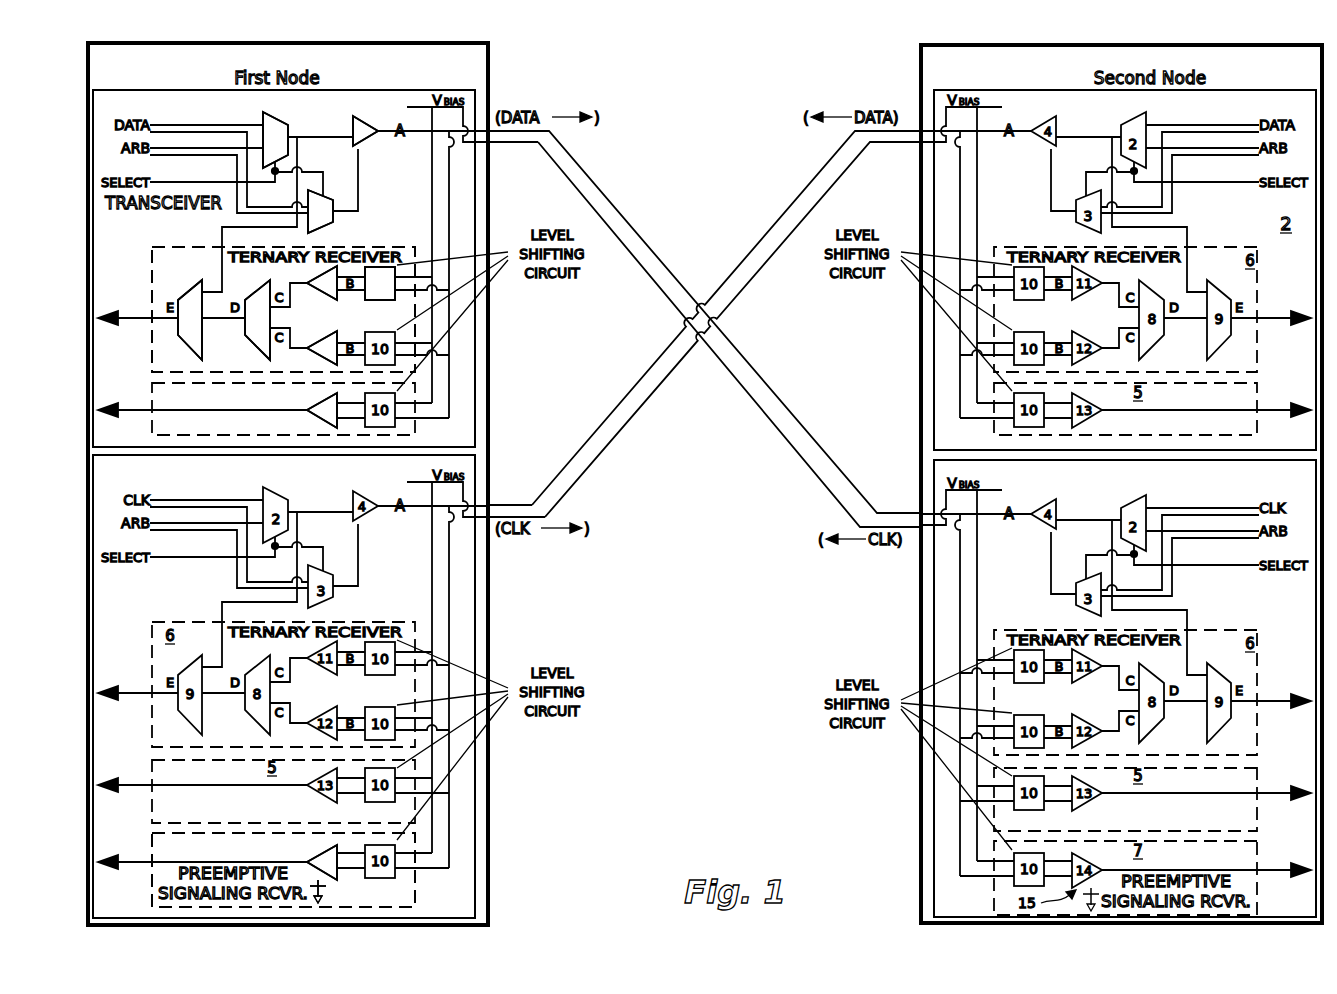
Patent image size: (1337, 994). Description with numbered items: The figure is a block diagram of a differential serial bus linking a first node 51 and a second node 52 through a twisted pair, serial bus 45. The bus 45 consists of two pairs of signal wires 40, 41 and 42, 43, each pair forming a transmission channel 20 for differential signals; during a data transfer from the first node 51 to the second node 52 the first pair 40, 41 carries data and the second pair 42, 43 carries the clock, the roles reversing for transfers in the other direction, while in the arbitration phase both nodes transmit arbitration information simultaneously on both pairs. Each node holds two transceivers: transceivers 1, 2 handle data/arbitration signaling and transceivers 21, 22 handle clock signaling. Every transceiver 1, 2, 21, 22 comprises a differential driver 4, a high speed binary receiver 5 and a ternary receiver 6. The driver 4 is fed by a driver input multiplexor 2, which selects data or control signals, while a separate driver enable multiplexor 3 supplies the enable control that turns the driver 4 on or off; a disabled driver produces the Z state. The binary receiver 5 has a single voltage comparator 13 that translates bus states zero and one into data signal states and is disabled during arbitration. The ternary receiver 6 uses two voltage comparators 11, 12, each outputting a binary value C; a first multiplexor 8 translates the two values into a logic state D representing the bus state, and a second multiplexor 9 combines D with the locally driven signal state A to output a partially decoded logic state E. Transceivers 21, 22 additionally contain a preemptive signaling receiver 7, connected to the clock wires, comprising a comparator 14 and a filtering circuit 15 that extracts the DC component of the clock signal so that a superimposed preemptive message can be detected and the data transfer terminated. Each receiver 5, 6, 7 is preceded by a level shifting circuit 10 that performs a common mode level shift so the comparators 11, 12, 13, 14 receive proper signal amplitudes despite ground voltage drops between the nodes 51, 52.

The first node 51 is at (268, 66).
The second node 52 is at (1141, 66).
The transceiver 1 is at (114, 236).
The transceiver 2 is at (275, 140).
The transceiver 21 is at (110, 613).
The transceiver 22 is at (1280, 615).
The driver enable multiplexor 3 is at (320, 211).
The differential driver 4 is at (365, 131).
The high speed binary receiver 5 is at (267, 401).
The ternary receiver 6 is at (165, 269).
The preemptive signaling receiver 7 is at (267, 851).
The first multiplexor 8 is at (257, 320).
The second multiplexor 9 is at (190, 320).
The level shifting circuit 10 is at (380, 283).
The voltage comparator 11 is at (322, 283).
The voltage comparator 12 is at (322, 348).
The voltage comparator 13 is at (322, 410).
The comparator 14 is at (322, 862).
The filtering circuit 15 is at (334, 886).
The transmission channel 20 is at (632, 292).
The signal wire 40 is at (608, 194).
The signal wire 41 is at (510, 145).
The signal wire 42 is at (502, 498).
The signal wire 43 is at (595, 454).
The serial bus 45 is at (676, 475).